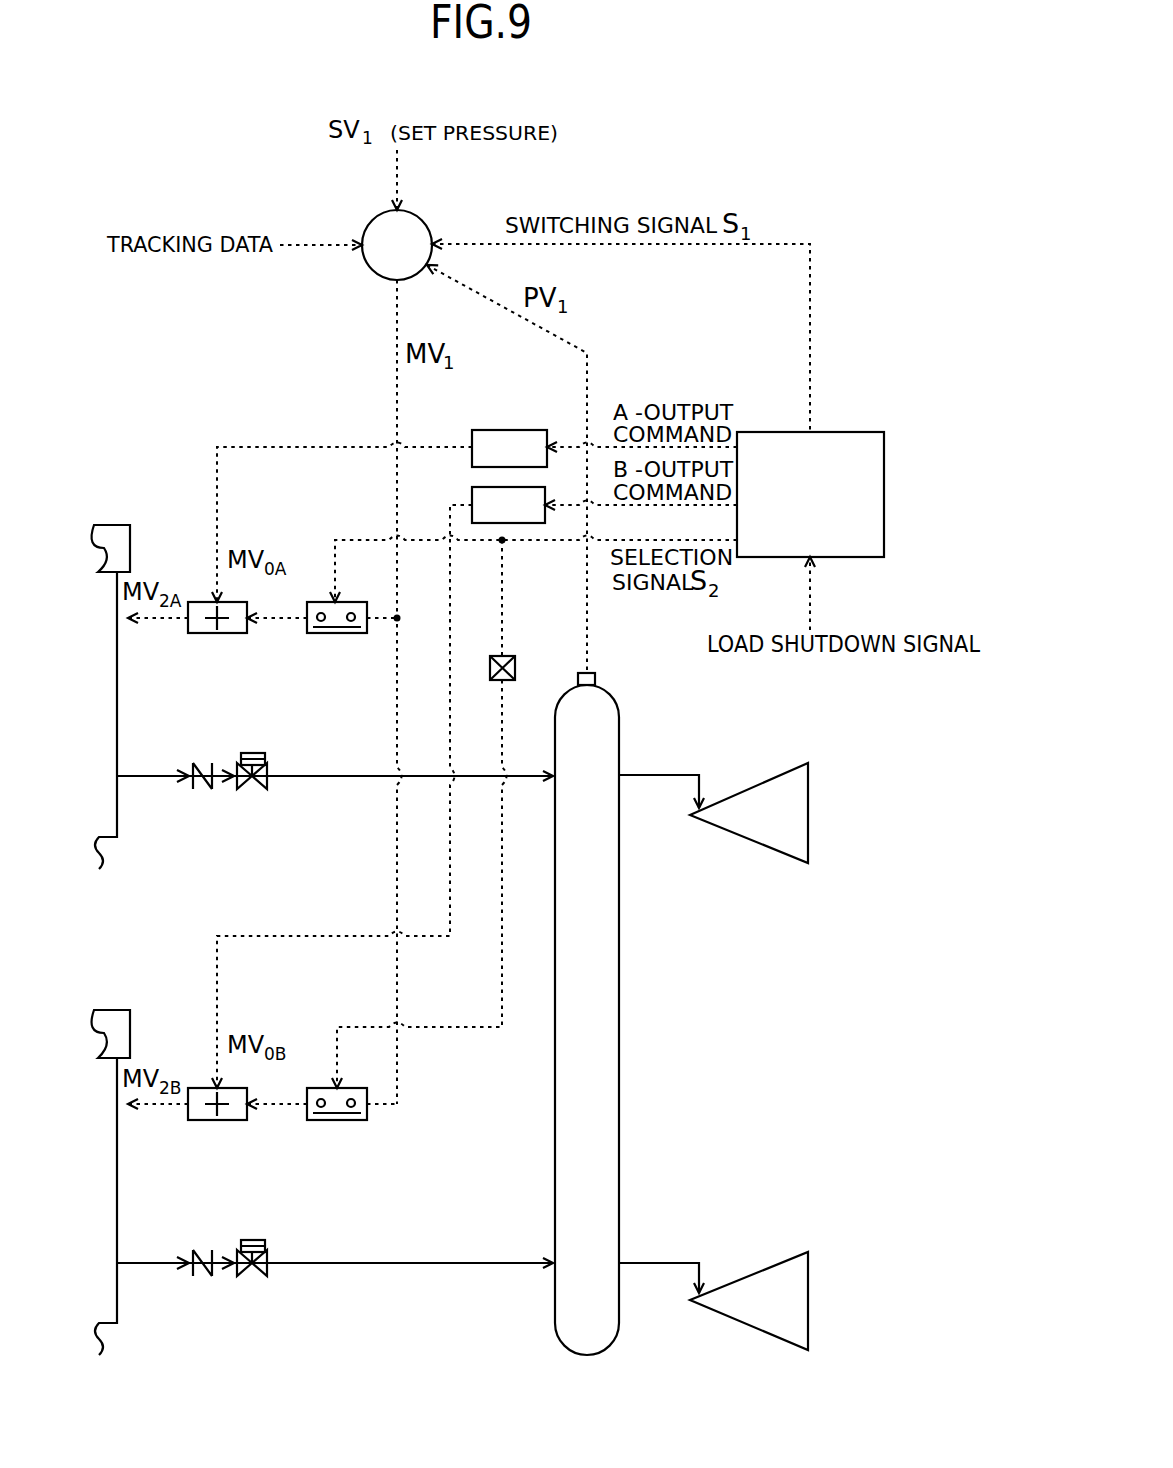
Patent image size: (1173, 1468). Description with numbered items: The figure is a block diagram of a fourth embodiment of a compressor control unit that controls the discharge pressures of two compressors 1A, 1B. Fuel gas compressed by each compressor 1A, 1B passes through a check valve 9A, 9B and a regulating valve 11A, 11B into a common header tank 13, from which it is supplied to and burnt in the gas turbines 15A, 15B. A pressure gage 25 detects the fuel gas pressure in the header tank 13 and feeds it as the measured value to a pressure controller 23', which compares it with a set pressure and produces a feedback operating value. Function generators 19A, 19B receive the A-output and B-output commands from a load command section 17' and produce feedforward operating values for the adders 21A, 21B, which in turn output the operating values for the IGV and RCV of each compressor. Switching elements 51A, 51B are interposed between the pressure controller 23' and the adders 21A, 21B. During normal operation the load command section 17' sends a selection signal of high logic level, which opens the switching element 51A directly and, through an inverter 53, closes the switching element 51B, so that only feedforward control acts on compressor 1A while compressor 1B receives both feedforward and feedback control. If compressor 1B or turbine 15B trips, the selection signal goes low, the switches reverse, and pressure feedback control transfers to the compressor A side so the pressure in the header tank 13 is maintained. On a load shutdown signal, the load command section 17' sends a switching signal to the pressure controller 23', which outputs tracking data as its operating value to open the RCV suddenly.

The compressor 1A is at (115, 525).
The compressor 1B is at (115, 1010).
The check valve 9A is at (200, 790).
The check valve 9B is at (200, 1277).
The regulating valve 11A is at (256, 790).
The regulating valve 11B is at (256, 1277).
The header tank 13 is at (619, 1093).
The gas turbine 15A is at (775, 855).
The gas turbine 15B is at (775, 1258).
The load command section 17' is at (810, 462).
The function generator 19A is at (522, 430).
The function generator 19B is at (470, 490).
The adder 21A is at (217, 633).
The adder 21B is at (217, 1120).
The pressure controller 23' is at (425, 223).
The pressure gage 25 is at (597, 678).
The switching element 51A is at (340, 633).
The switching element 51B is at (340, 1120).
The inverter 53 is at (505, 653).